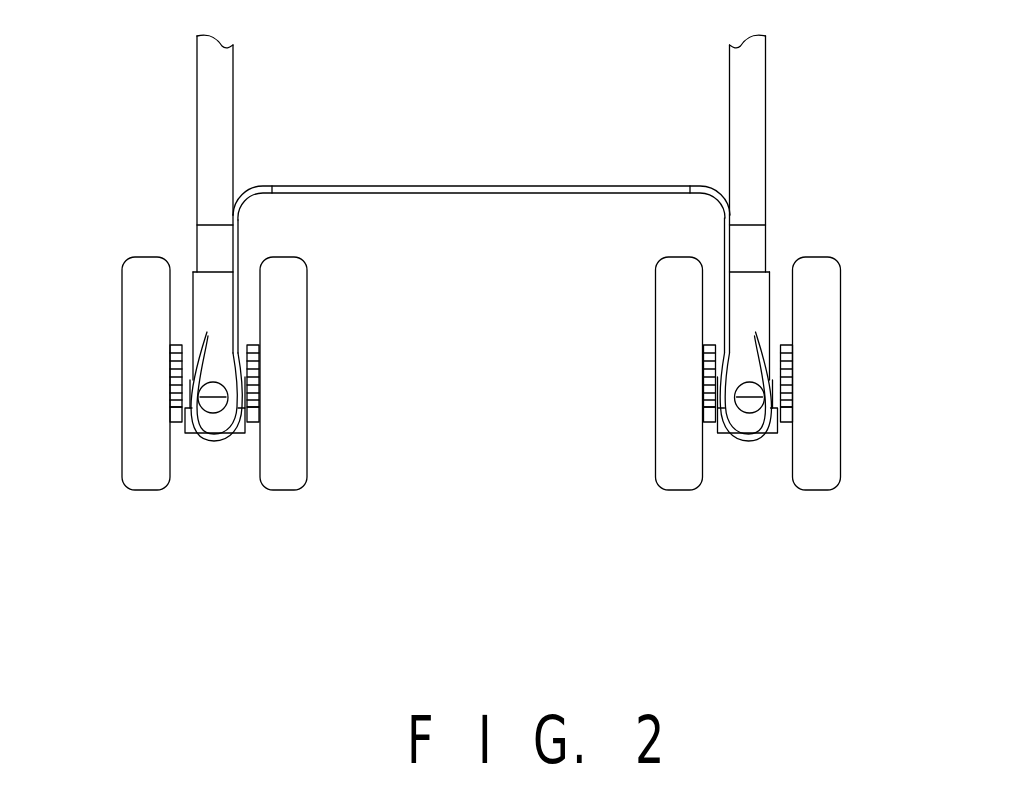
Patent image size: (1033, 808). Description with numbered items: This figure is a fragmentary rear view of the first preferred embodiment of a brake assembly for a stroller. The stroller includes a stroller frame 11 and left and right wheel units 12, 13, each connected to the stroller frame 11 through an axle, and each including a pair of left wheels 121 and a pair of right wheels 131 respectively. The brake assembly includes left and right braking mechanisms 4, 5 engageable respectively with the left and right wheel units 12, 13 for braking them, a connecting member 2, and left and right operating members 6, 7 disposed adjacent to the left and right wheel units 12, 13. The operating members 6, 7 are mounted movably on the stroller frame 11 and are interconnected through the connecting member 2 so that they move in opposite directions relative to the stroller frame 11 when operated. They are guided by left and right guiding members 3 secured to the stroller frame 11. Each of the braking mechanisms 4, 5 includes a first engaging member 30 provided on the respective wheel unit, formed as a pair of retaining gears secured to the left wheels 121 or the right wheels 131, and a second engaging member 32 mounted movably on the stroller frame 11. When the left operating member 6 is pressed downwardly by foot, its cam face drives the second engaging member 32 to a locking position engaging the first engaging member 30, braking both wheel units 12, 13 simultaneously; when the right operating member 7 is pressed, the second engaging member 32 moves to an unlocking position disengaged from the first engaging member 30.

The connecting member 2 is at (468, 190).
The guiding member 3 is at (197, 253).
The left braking mechanism 4 is at (180, 432).
The right braking mechanism 5 is at (715, 432).
The left operating member 6 is at (212, 440).
The right operating member 7 is at (752, 440).
The stroller frame 11 is at (743, 117).
The left wheel unit 12 is at (216, 313).
The right wheel unit 13 is at (759, 428).
The left wheels 121 is at (133, 273).
The right wheels 131 is at (680, 490).
The first engaging member 30 is at (180, 344).
The second engaging member 32 is at (246, 440).